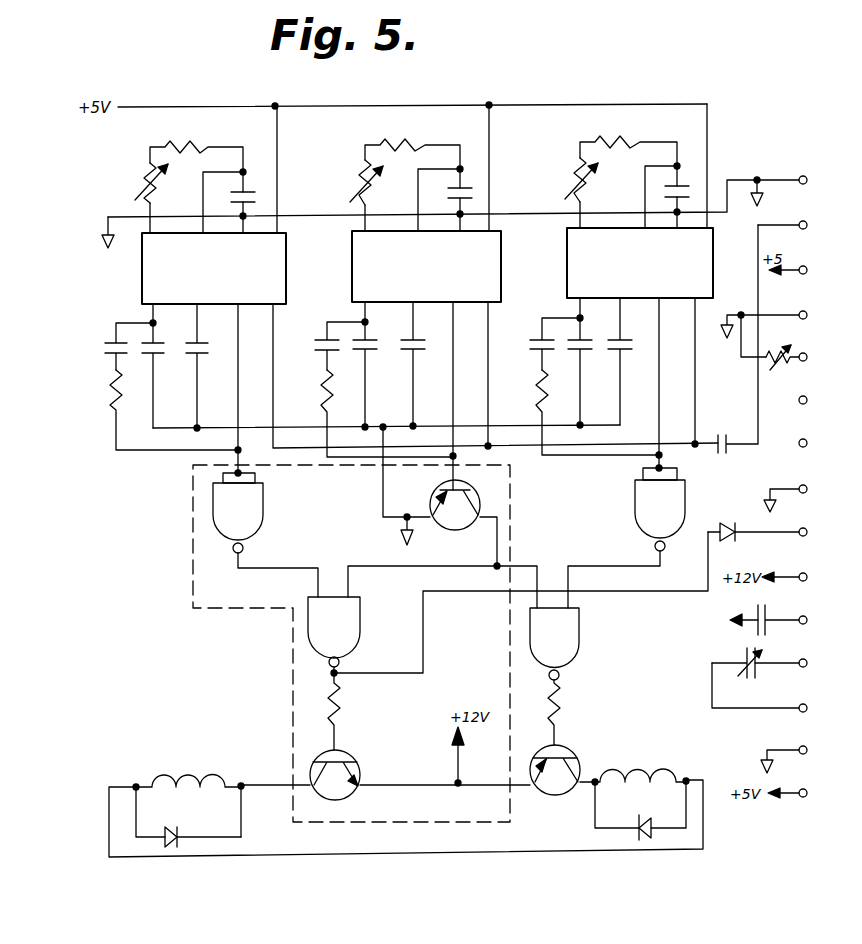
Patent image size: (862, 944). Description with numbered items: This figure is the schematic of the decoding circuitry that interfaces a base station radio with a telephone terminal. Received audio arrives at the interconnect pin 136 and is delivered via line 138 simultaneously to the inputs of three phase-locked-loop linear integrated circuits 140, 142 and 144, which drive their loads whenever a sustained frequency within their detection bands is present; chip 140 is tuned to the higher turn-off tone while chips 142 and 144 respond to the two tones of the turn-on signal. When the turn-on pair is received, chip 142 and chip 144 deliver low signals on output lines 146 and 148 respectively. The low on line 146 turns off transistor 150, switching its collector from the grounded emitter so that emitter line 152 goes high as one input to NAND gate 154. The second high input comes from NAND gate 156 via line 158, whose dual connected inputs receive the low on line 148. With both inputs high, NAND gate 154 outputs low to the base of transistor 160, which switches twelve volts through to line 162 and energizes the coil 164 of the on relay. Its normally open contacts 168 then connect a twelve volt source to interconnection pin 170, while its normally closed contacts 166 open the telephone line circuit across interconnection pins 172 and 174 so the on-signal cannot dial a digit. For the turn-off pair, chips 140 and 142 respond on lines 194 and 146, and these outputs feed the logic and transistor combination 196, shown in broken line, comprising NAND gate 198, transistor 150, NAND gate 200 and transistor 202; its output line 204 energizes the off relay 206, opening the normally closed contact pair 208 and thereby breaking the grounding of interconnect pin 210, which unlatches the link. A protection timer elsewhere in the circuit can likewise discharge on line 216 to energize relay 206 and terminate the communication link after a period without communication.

The linear integrated circuit 140 is at (232, 283).
The linear integrated circuit 142 is at (448, 281).
The linear integrated circuit 144 is at (660, 277).
The interconnect pin 136 is at (805, 222).
The interconnect pin 210 is at (800, 352).
The normally closed contact pair 208 is at (773, 366).
The line 138 is at (733, 447).
The output line 148 is at (659, 426).
The output line 146 is at (453, 384).
The output line 194 is at (238, 378).
The transistor 150 is at (437, 488).
The emitter line 152 is at (497, 547).
The NAND gate 156 is at (660, 509).
The line 158 is at (625, 566).
The NAND gate 198 is at (238, 513).
The logic and transistor combination 196 is at (192, 589).
The NAND gate 200 is at (334, 632).
The NAND gate 154 is at (554, 644).
The transistor 202 is at (357, 763).
The output line 204 is at (250, 787).
The off relay 206 is at (196, 775).
The transistor 160 is at (548, 795).
The line 162 is at (582, 774).
The coil 164 is at (634, 770).
The line 216 is at (790, 531).
The normally open contacts 168 is at (753, 621).
The interconnection pin 170 is at (805, 620).
The normally closed contacts 166 is at (738, 660).
The interconnection pin 172 is at (806, 665).
The interconnection pin 174 is at (801, 712).